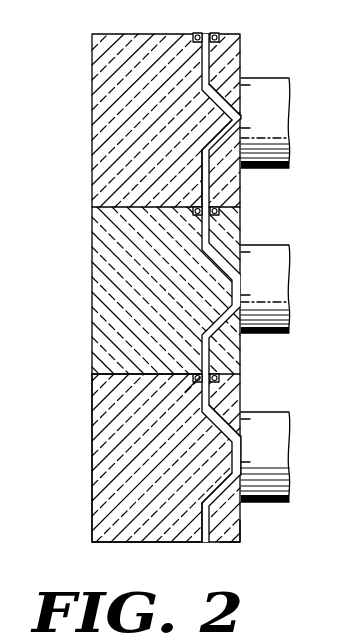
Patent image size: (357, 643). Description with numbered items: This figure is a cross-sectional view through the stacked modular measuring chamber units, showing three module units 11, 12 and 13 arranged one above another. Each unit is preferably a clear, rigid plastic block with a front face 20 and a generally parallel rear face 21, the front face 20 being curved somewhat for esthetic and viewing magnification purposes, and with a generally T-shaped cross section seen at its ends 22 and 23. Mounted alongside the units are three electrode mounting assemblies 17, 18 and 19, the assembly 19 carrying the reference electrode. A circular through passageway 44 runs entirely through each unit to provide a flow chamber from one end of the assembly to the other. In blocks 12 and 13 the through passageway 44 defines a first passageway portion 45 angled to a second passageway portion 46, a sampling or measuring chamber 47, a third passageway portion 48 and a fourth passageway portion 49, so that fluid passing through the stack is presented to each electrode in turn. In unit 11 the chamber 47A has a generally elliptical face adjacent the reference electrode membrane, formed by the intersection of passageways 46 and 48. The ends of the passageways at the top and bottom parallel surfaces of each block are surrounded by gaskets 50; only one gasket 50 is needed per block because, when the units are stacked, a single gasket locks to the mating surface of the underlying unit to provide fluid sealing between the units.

The module unit 11 is at (90, 115).
The module unit 12 is at (90, 290).
The module unit 13 is at (88, 456).
The electrode mounting assembly 17 is at (264, 425).
The electrode mounting assembly 18 is at (264, 262).
The electrode mounting assembly 19 is at (265, 90).
The front face 20 is at (92, 430).
The rear face 21 is at (240, 541).
The end 22 is at (122, 542).
The end 23 is at (127, 375).
The through passageway 44 is at (224, 488).
The first passageway portion 45 is at (208, 191).
The second passageway portion 46 is at (216, 150).
The sampling or measuring chamber 47 is at (241, 457).
The chamber 47A is at (241, 123).
The third passageway portion 48 is at (215, 72).
The fourth passageway portion 49 is at (188, 33).
The gasket 50 is at (190, 386).